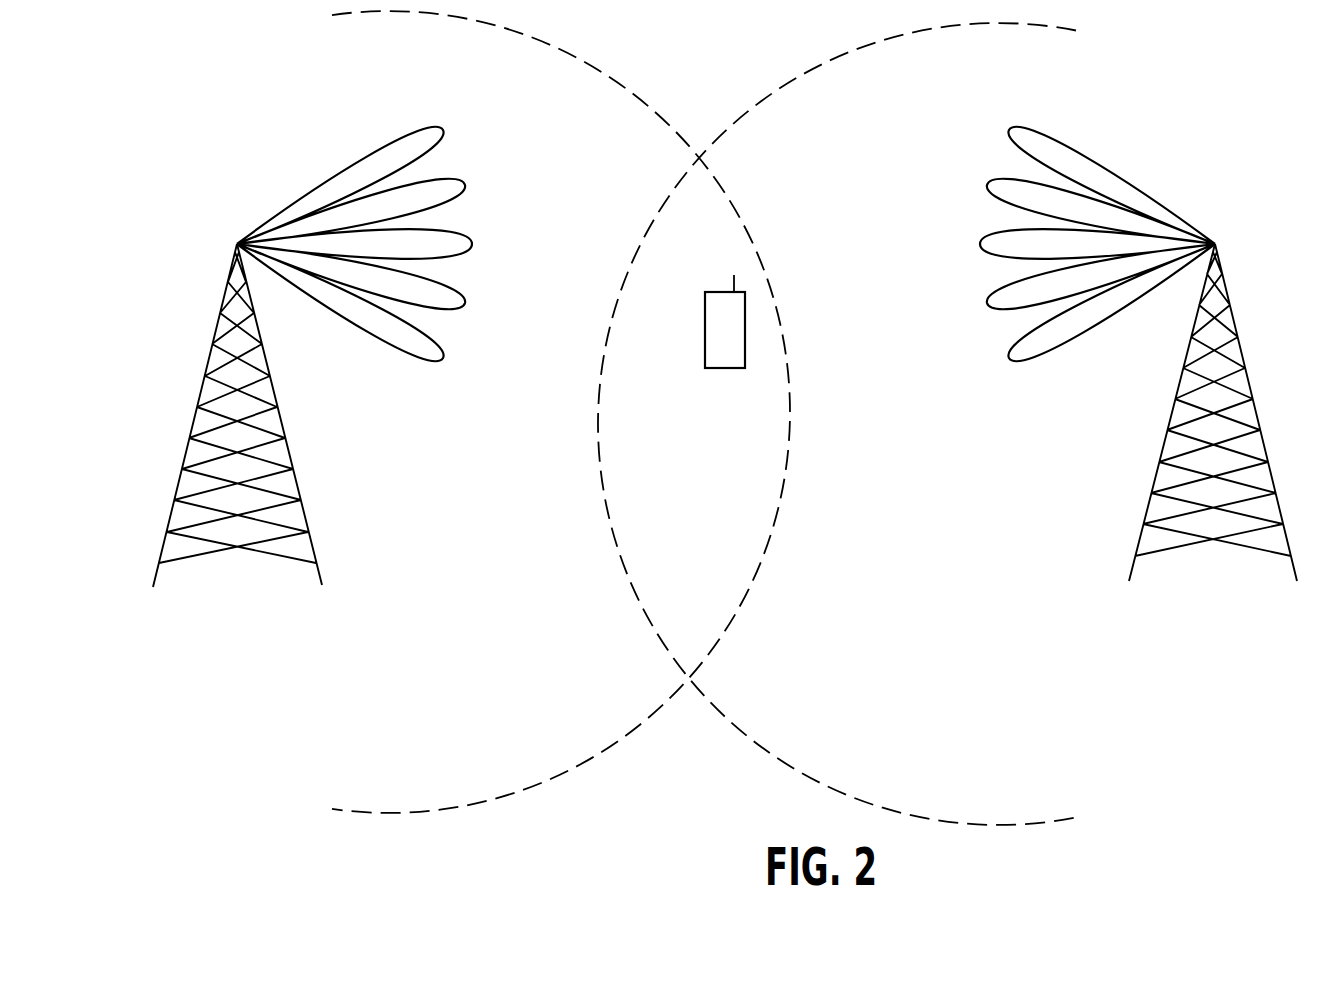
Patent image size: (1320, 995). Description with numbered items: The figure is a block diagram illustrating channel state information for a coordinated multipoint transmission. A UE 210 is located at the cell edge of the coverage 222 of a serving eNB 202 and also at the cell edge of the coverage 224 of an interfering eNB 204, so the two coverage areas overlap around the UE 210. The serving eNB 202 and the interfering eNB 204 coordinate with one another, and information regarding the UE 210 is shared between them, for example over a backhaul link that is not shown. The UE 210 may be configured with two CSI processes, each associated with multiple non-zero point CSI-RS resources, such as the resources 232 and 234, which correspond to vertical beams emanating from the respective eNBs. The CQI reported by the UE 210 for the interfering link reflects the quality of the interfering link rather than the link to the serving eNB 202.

The serving eNB 202 is at (317, 573).
The interfering eNB 204 is at (1296, 582).
The UE 210 is at (723, 368).
The coverage 222 is at (491, 814).
The coverage 224 is at (1011, 818).
The NZP CSI-RS resources 232 is at (359, 244).
The NZP CSI-RS resources 234 is at (1096, 244).